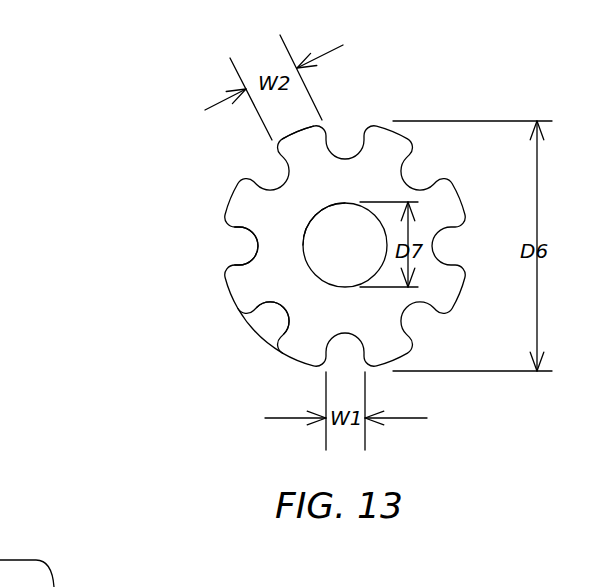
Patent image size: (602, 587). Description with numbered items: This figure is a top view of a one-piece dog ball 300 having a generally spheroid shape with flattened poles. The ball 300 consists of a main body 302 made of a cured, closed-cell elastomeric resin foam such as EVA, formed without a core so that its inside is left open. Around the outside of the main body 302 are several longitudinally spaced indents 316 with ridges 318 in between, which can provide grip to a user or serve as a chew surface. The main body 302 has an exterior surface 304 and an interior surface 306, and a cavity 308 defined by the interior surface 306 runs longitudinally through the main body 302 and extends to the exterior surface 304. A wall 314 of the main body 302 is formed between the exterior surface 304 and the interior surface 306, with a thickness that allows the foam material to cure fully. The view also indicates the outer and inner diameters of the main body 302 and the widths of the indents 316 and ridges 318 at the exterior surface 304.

The ball 300 is at (111, 190).
The main body 302 is at (230, 192).
The exterior surface 304 is at (298, 130).
The interior surface 306 is at (308, 223).
The cavity 308 is at (364, 255).
The wall 314 is at (303, 302).
The indents 316 is at (237, 247).
The ridges 318 is at (252, 283).